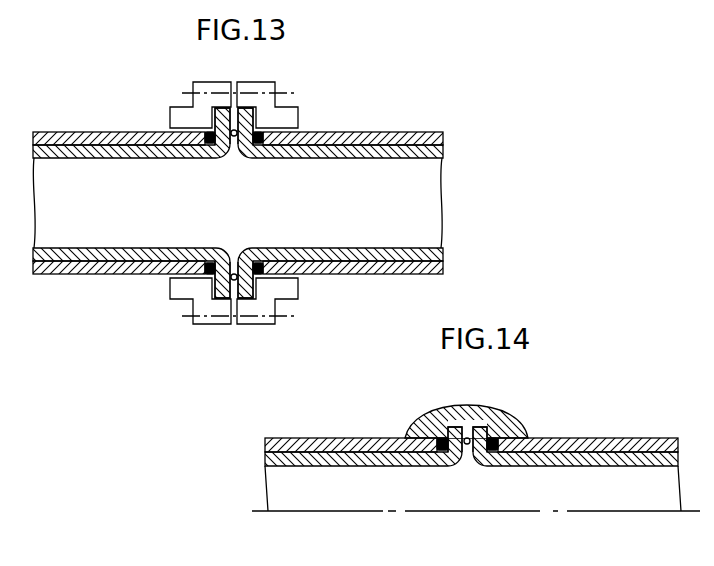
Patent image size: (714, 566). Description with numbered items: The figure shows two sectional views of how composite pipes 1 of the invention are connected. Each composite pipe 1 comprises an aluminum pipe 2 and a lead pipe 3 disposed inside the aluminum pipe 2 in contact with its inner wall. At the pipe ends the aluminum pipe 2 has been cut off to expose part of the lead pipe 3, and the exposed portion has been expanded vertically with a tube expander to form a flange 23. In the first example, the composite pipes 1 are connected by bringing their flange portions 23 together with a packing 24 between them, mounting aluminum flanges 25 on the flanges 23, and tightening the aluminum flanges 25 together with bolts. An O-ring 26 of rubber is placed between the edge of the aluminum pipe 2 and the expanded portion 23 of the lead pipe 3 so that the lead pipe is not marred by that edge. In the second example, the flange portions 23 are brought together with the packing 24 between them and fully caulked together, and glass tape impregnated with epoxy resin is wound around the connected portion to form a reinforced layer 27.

In FIG. 13, the composite pipe 1 is at (382, 129).
In FIG. 14, the composite pipe 1 is at (602, 435).
In FIG. 13, the aluminum pipe 2 is at (384, 276).
In FIG. 14, the aluminum pipe 2 is at (543, 437).
In FIG. 13, the lead pipe 3 is at (424, 158).
In FIG. 14, the lead pipe 3 is at (631, 466).
In FIG. 13, the flange 23 is at (233, 282).
In FIG. 14, the flange 23 is at (466, 447).
In FIG. 13, the packing 24 is at (240, 132).
In FIG. 14, the packing 24 is at (460, 430).
In FIG. 13, the aluminum flange 25 is at (183, 112).
In FIG. 13, the O-ring 26 is at (212, 264).
In FIG. 14, the O-ring 26 is at (441, 452).
In FIG. 14, the reinforced layer 27 is at (424, 425).